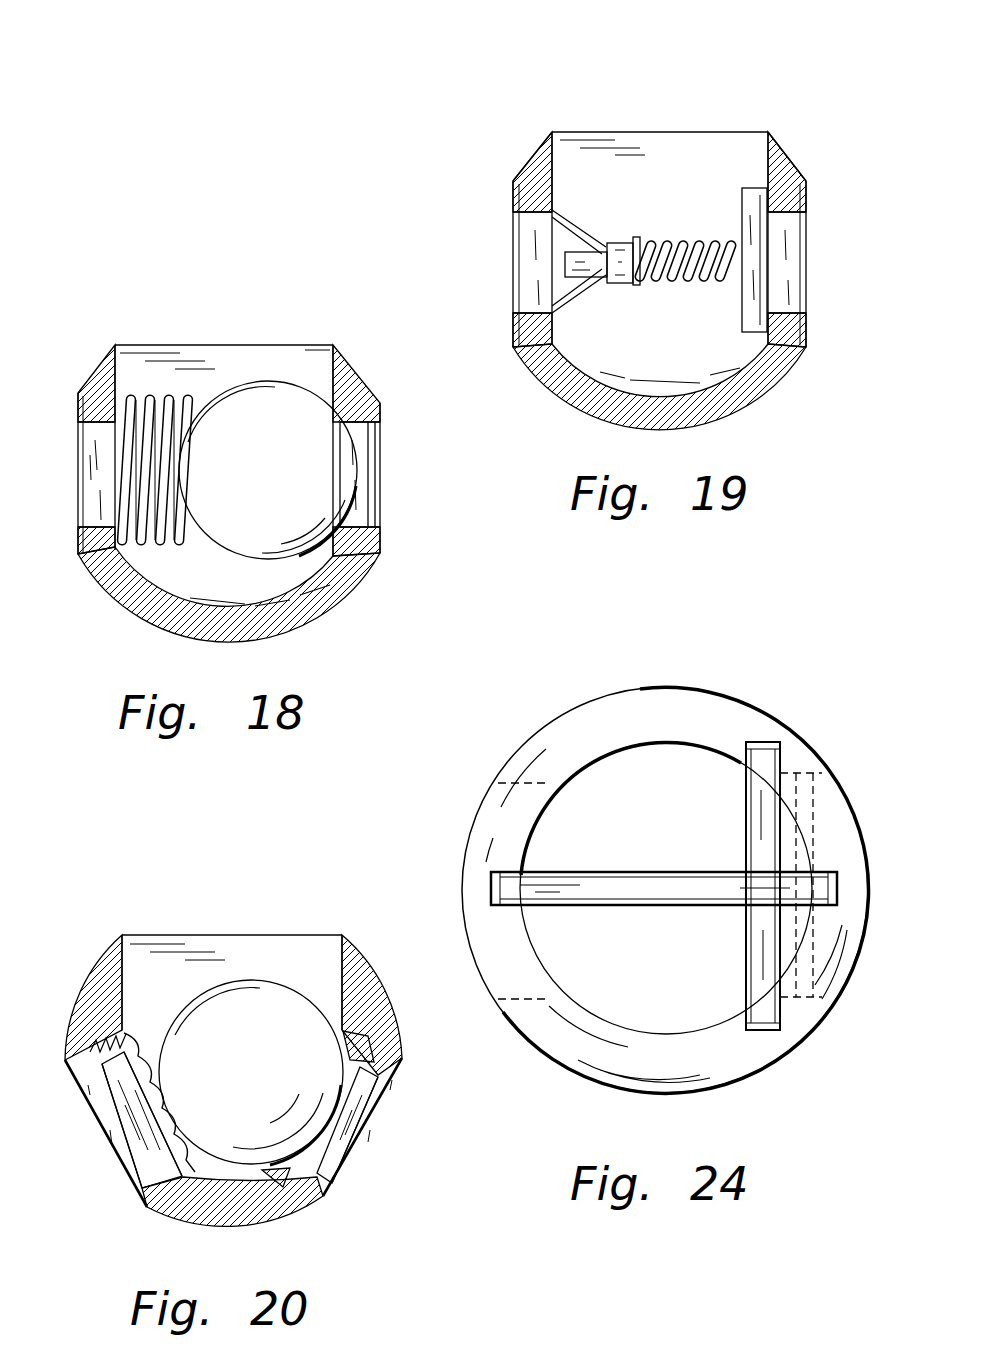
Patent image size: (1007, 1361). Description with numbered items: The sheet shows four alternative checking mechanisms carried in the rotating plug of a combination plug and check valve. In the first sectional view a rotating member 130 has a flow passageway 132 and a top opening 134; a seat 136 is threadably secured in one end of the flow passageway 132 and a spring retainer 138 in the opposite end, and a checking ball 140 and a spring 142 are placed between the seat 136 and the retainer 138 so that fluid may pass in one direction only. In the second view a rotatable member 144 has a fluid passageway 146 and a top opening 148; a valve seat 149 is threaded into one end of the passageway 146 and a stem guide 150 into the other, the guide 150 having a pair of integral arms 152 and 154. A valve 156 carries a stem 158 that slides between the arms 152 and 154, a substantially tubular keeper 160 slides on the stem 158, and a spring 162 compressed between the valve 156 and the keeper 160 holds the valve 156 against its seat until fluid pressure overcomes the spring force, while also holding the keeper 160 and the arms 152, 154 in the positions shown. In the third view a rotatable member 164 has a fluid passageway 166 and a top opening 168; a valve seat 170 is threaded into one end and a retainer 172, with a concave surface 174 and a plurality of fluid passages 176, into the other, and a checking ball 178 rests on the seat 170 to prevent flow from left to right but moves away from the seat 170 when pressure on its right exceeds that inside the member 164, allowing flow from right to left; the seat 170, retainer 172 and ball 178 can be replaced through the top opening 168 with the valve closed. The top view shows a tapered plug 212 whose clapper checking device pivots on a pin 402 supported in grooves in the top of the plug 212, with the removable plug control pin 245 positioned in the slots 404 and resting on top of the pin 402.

In FIG. 18, the rotating member 130 is at (270, 617).
In FIG. 18, the flow passageway 132 is at (362, 505).
In FIG. 18, the top opening 134 is at (240, 355).
In FIG. 18, the seat 136 is at (368, 427).
In FIG. 18, the spring retainer 138 is at (125, 560).
In FIG. 18, the checking ball 140 is at (282, 448).
In FIG. 18, the spring 142 is at (117, 397).
In FIG. 19, the rotatable member 144 is at (638, 410).
In FIG. 19, the fluid passageway 146 is at (527, 300).
In FIG. 19, the top opening 148 is at (588, 165).
In FIG. 19, the valve seat 149 is at (808, 193).
In FIG. 19, the stem guide 150 is at (532, 180).
In FIG. 19, the integral arm 152 is at (567, 226).
In FIG. 19, the integral arm 154 is at (567, 298).
In FIG. 19, the valve 156 is at (753, 248).
In FIG. 19, the stem 158 is at (738, 257).
In FIG. 19, the keeper 160 is at (627, 257).
In FIG. 19, the spring 162 is at (638, 280).
In FIG. 20, the rotatable member 164 is at (88, 990).
In FIG. 20, the fluid passageway 166 is at (125, 1167).
In FIG. 20, the top opening 168 is at (247, 943).
In FIG. 20, the valve seat 170 is at (395, 1008).
In FIG. 24, the valve seat 170 is at (549, 999).
In FIG. 20, the retainer 172 is at (177, 1223).
In FIG. 20, the concave surface 174 is at (140, 1046).
In FIG. 20, the fluid passages 176 is at (100, 1103).
In FIG. 20, the checking ball 178 is at (280, 1083).
In FIG. 24, the plug control pin 245 is at (628, 882).
In FIG. 24, the tapered plug 212 is at (644, 1063).
In FIG. 24, the pin 402 is at (758, 1017).
In FIG. 24, the slots 404 is at (492, 905).